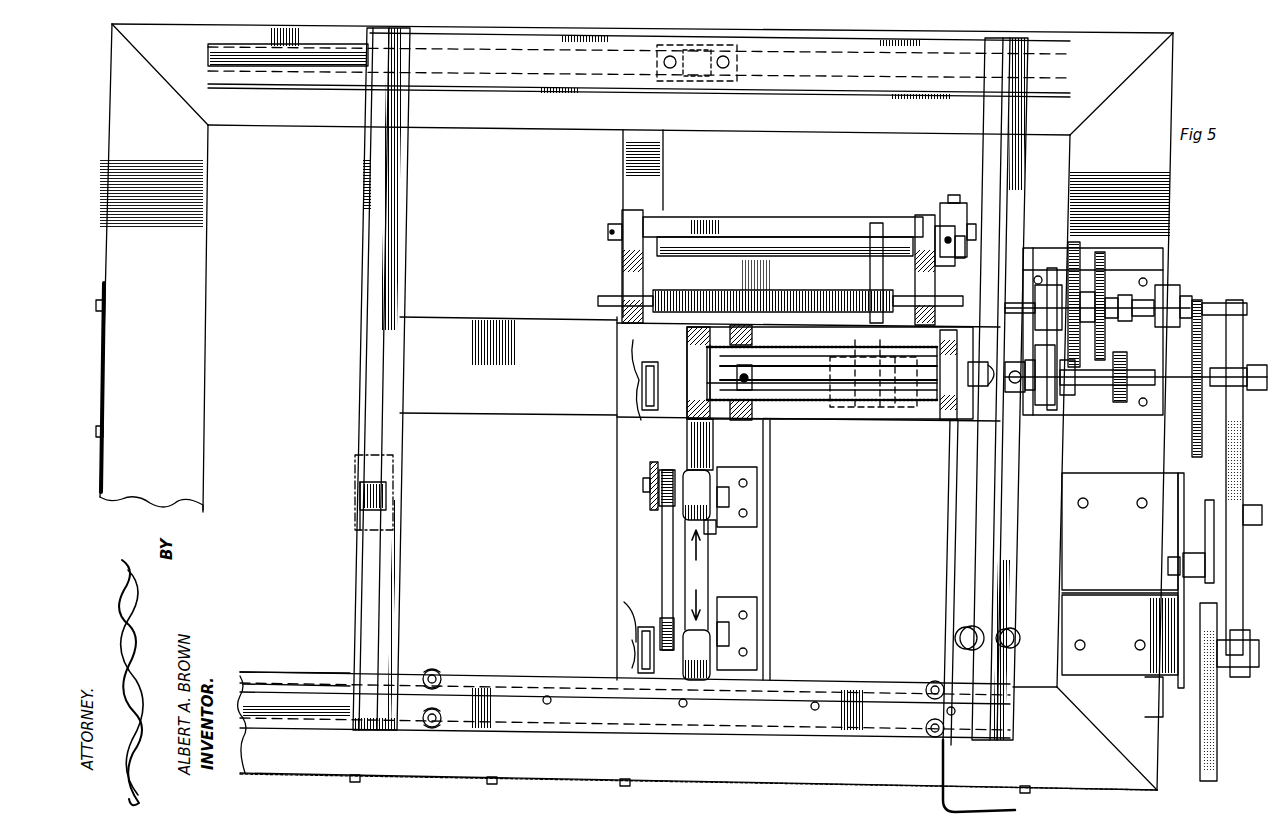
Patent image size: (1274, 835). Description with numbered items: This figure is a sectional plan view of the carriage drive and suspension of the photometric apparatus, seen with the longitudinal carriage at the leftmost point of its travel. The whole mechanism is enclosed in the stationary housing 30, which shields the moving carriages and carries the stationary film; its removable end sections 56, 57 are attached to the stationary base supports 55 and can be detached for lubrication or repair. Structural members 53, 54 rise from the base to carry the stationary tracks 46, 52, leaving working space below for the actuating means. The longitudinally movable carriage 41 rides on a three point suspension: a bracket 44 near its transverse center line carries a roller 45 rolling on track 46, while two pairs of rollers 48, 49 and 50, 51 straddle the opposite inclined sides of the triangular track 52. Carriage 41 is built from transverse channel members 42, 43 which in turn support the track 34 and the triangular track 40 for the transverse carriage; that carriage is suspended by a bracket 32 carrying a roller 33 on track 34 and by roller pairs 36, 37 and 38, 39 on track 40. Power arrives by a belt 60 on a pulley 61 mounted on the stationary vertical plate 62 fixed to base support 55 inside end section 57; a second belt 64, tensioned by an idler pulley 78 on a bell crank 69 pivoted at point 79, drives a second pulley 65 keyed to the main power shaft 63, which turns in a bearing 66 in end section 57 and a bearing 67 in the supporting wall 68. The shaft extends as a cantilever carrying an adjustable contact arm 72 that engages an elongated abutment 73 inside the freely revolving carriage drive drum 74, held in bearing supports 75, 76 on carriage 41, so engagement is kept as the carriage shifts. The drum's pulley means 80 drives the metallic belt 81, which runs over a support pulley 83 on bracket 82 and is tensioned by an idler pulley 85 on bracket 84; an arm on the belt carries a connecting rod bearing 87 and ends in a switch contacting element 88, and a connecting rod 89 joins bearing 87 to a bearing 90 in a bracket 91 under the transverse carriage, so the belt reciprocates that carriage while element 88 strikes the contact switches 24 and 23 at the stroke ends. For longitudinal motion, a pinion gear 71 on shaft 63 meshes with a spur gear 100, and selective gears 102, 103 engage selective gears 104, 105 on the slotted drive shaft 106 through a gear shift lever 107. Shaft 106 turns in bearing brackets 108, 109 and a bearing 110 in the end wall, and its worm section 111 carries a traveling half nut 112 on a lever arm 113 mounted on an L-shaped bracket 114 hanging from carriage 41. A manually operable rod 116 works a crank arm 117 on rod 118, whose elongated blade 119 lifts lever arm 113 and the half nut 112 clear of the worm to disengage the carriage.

The mechanical contact switch 23 is at (640, 388).
The mechanical contact switch 24 is at (632, 661).
The stationary housing 30 is at (688, 784).
The bracket 32 is at (360, 520).
The roller 33 is at (364, 483).
The track 34 is at (376, 337).
The roller 36 is at (960, 634).
The roller 37 is at (1016, 636).
The roller 38 is at (978, 386).
The roller 39 is at (1020, 393).
The track 40 is at (1015, 176).
The longitudinally movable carriage 41 is at (534, 672).
The transverse channel member 42 is at (410, 250).
The transverse channel member 43 is at (956, 555).
The bracket 44 is at (684, 80).
The roller 45 is at (720, 80).
The stationary track 46 is at (347, 72).
The roller 48 is at (934, 682).
The roller 49 is at (928, 735).
The roller 50 is at (433, 671).
The roller 51 is at (435, 726).
The track 52 is at (345, 681).
The structural member 53 is at (268, 84).
The structural member 54 is at (289, 672).
The stationary base support 55 is at (1170, 206).
The removable end section 56 is at (105, 362).
The removable end section 57 is at (1134, 474).
The belt 60 is at (1217, 761).
The pulley 61 is at (1200, 700).
The stationary vertical plate 62 is at (1170, 617).
The main power shaft 63 is at (826, 356).
The second belt 64 is at (1231, 676).
The second pulley 65 is at (1242, 450).
The bearing 66 is at (1158, 402).
The bearing 67 is at (1052, 402).
The supporting wall 68 is at (1054, 280).
The bell crank 69 is at (1201, 557).
The pinion gear 71 is at (1205, 370).
The adjustable contact arm 72 is at (738, 388).
The elongated abutment 73 is at (790, 402).
The carriage drive drum 74 is at (820, 400).
The bearing support 75 is at (736, 420).
The bearing support 76 is at (940, 420).
The idler pulley 78 is at (1216, 500).
The pivot point 79 is at (1188, 570).
The pulley means 80 is at (688, 345).
The metallic belt 81 is at (696, 450).
The bracket 82 is at (750, 634).
The support pulley 83 is at (710, 586).
The bracket 84 is at (749, 501).
The idler pulley 85 is at (712, 526).
The connecting rod bearing 87 is at (667, 645).
The switch contacting element 88 is at (625, 616).
The connecting rod 89 is at (662, 564).
The bearing 90 is at (656, 501).
The bracket 91 is at (650, 469).
The spur gear 100 is at (1195, 346).
The selective gear 102 is at (1118, 400).
The selective gear 103 is at (1070, 398).
The selective gear 104 is at (1100, 256).
The selective gear 105 is at (1075, 246).
The slotted drive shaft 106 is at (1148, 298).
The gear shift lever 107 is at (1215, 304).
The bearing bracket 108 is at (622, 266).
The bearing bracket 109 is at (936, 213).
The bearing 110 is at (1180, 289).
The worm section 111 is at (718, 292).
The traveling half nut 112 is at (874, 300).
The lever arm 113 is at (876, 224).
The L-shaped bracket 114 is at (890, 420).
The manually operable rod 116 is at (947, 499).
The crank arm 117 is at (951, 203).
The rod 118 is at (796, 236).
The elongated blade 119 is at (722, 246).